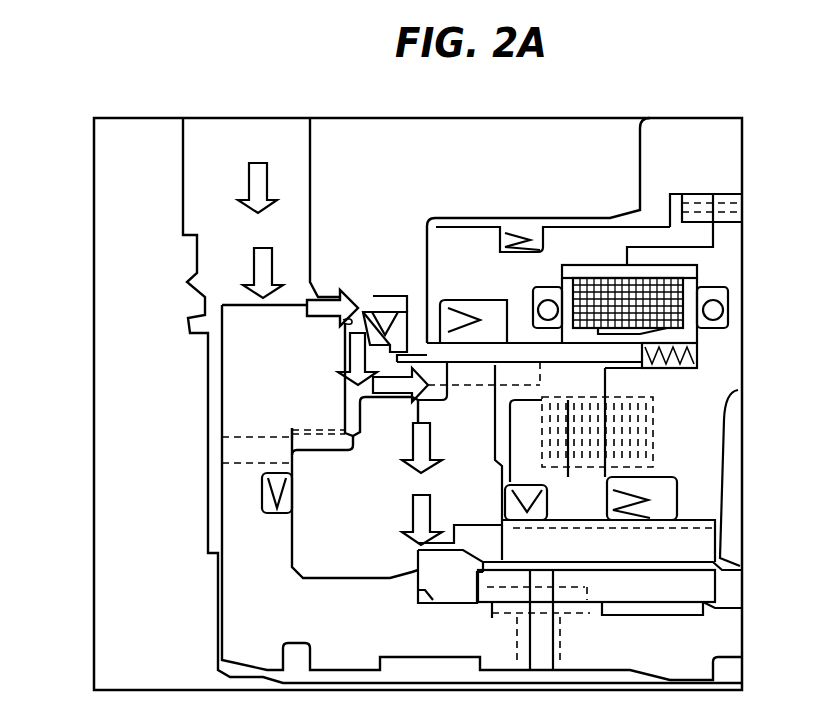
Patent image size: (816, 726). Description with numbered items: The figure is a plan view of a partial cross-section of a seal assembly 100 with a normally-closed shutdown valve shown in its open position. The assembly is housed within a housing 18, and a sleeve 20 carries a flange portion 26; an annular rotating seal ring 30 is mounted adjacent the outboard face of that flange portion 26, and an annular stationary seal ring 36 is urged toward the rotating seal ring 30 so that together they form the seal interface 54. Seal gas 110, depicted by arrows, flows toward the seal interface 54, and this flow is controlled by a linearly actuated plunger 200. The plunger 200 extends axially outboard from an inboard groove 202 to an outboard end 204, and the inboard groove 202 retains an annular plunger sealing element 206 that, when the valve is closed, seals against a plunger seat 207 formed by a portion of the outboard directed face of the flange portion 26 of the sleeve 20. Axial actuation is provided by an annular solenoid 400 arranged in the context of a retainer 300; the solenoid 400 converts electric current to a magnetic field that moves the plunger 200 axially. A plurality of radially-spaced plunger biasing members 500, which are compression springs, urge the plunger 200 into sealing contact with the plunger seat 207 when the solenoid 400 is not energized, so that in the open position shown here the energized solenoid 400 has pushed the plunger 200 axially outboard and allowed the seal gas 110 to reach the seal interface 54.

The seal assembly 100 is at (237, 106).
The housing 18 is at (496, 167).
The retainer 300 is at (502, 291).
The annular solenoid 400 is at (600, 266).
The plunger biasing members 500 is at (700, 352).
The outboard end 204 is at (643, 362).
The flange portion 26 is at (293, 394).
The rotating seal ring 30 is at (363, 521).
The stationary seal ring 36 is at (480, 486).
The sleeve 20 is at (370, 627).
The seal interface 54 is at (418, 603).
The seal gas 110 is at (247, 263).
The plunger sealing element 206 is at (353, 307).
The plunger seat 207 is at (343, 322).
The inboard groove 202 is at (378, 320).
The plunger 200 is at (400, 315).